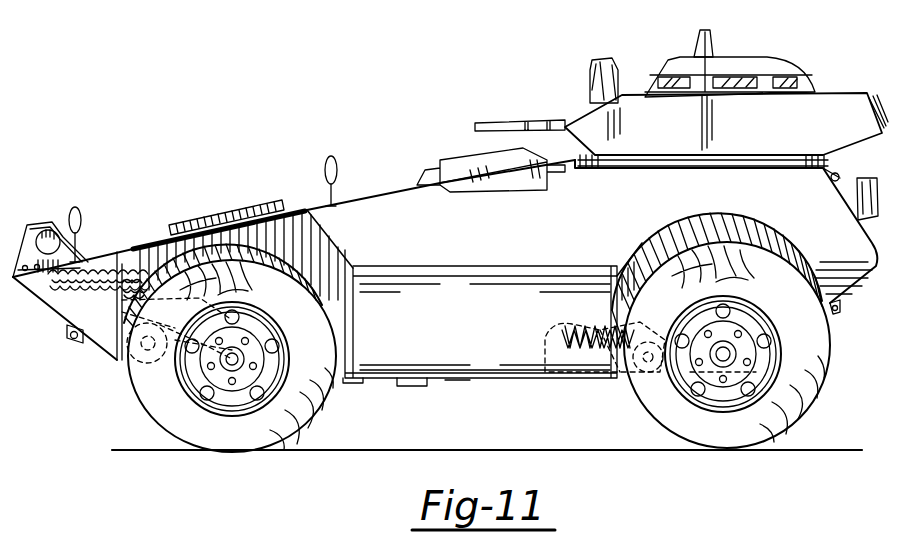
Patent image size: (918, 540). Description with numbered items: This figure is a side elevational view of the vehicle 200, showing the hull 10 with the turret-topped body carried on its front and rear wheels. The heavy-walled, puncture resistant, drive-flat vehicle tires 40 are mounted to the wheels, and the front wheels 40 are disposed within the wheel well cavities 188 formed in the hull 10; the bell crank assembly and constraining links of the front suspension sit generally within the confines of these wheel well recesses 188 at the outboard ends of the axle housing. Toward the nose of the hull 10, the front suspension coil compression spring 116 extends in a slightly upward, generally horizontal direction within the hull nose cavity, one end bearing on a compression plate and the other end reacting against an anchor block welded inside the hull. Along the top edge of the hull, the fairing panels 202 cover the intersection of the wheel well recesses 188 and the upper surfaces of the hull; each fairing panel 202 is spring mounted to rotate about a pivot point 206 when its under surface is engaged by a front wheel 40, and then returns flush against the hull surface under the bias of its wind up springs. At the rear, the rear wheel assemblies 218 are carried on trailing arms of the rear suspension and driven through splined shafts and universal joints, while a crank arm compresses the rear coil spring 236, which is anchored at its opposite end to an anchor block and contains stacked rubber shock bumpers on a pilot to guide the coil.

The hull 10 is at (66, 334).
The vehicle tires 40 is at (134, 410).
The coil compression spring 116 is at (102, 268).
The wheel well cavities 188 is at (286, 236).
The vehicle 200 is at (354, 167).
The fairing panels 202 is at (143, 247).
The pivot point 206 is at (190, 226).
The rear wheel assemblies 218 is at (634, 419).
The rear coil spring 236 is at (541, 340).